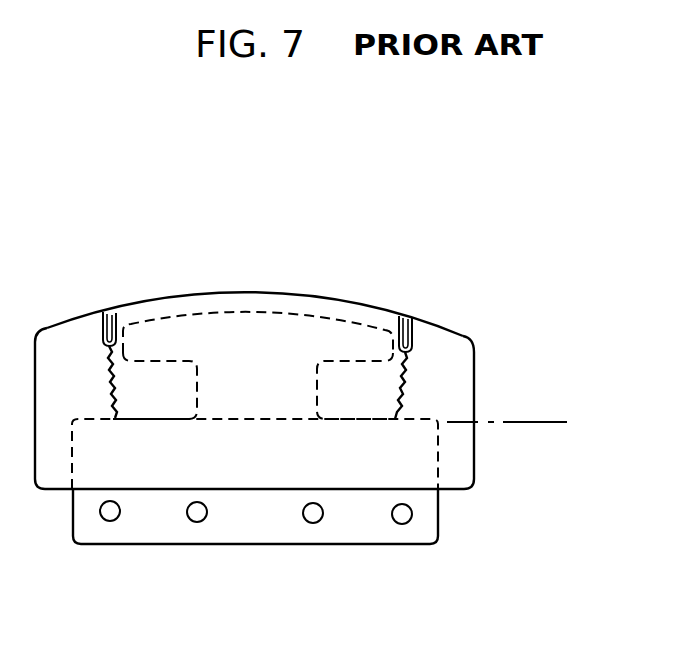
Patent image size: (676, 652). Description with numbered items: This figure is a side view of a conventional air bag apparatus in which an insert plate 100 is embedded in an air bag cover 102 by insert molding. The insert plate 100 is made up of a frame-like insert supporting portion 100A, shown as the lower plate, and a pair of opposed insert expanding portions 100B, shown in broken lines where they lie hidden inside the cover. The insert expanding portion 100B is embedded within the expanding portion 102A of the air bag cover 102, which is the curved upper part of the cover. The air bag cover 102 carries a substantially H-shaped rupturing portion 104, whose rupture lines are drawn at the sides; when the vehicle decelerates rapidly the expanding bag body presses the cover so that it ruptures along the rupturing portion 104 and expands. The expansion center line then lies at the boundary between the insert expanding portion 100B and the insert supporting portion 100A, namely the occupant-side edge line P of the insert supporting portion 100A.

The insert plate 100 is at (288, 548).
The insert supporting portion 100A is at (372, 532).
The insert expanding portion 100B is at (288, 325).
The air bag cover 102 is at (468, 336).
The expanding portion 102A is at (245, 306).
The rupturing portion 104 is at (110, 311).
The edge line P is at (543, 421).